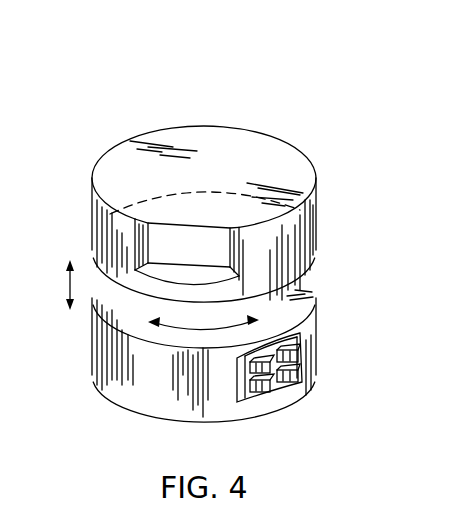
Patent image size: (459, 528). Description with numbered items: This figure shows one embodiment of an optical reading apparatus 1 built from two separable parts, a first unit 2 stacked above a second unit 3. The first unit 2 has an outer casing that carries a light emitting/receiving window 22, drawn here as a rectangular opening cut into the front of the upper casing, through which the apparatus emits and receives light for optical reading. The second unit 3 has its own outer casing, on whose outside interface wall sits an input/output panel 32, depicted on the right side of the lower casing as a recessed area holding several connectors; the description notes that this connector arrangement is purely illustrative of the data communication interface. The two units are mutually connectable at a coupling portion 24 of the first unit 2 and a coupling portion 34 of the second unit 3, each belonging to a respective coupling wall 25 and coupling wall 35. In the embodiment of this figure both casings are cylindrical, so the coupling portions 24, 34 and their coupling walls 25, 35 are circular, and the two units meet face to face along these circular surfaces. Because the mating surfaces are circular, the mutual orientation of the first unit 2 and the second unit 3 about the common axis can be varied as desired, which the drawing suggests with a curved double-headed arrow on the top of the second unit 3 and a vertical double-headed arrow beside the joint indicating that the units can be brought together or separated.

The optical reading apparatus 1 is at (120, 90).
The first unit 2 is at (105, 218).
The second unit 3 is at (97, 362).
The light emitting/receiving window 22 is at (203, 237).
The coupling portion 24 is at (340, 250).
The coupling wall 25 is at (297, 251).
The input/output panel 32 is at (300, 360).
The coupling portion 34 is at (372, 336).
The coupling wall 35 is at (293, 287).